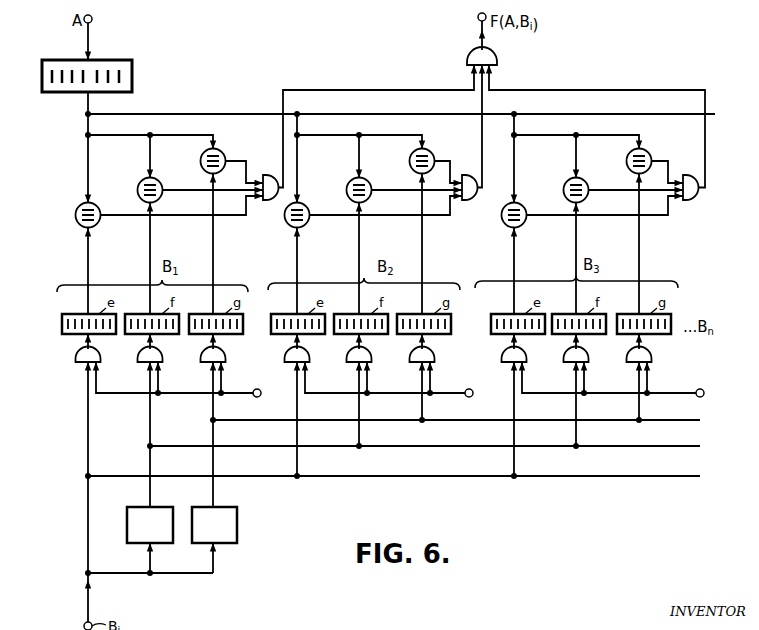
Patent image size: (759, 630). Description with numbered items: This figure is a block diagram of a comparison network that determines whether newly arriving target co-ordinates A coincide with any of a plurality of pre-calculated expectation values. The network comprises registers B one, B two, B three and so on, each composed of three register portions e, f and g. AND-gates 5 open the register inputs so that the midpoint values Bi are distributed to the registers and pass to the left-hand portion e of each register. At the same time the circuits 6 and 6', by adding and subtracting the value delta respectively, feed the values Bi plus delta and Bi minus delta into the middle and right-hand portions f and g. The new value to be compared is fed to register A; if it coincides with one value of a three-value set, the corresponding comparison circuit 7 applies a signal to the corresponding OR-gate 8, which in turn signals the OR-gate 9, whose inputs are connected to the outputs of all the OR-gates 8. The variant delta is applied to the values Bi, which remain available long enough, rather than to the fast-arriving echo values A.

The AND-gate 5 is at (201, 355).
The adding circuit 6 is at (137, 525).
The subtracting circuit 6' is at (226, 525).
The comparison circuit 7 is at (97, 205).
The OR-gate 8 is at (266, 200).
The OR-gate 9 is at (497, 56).